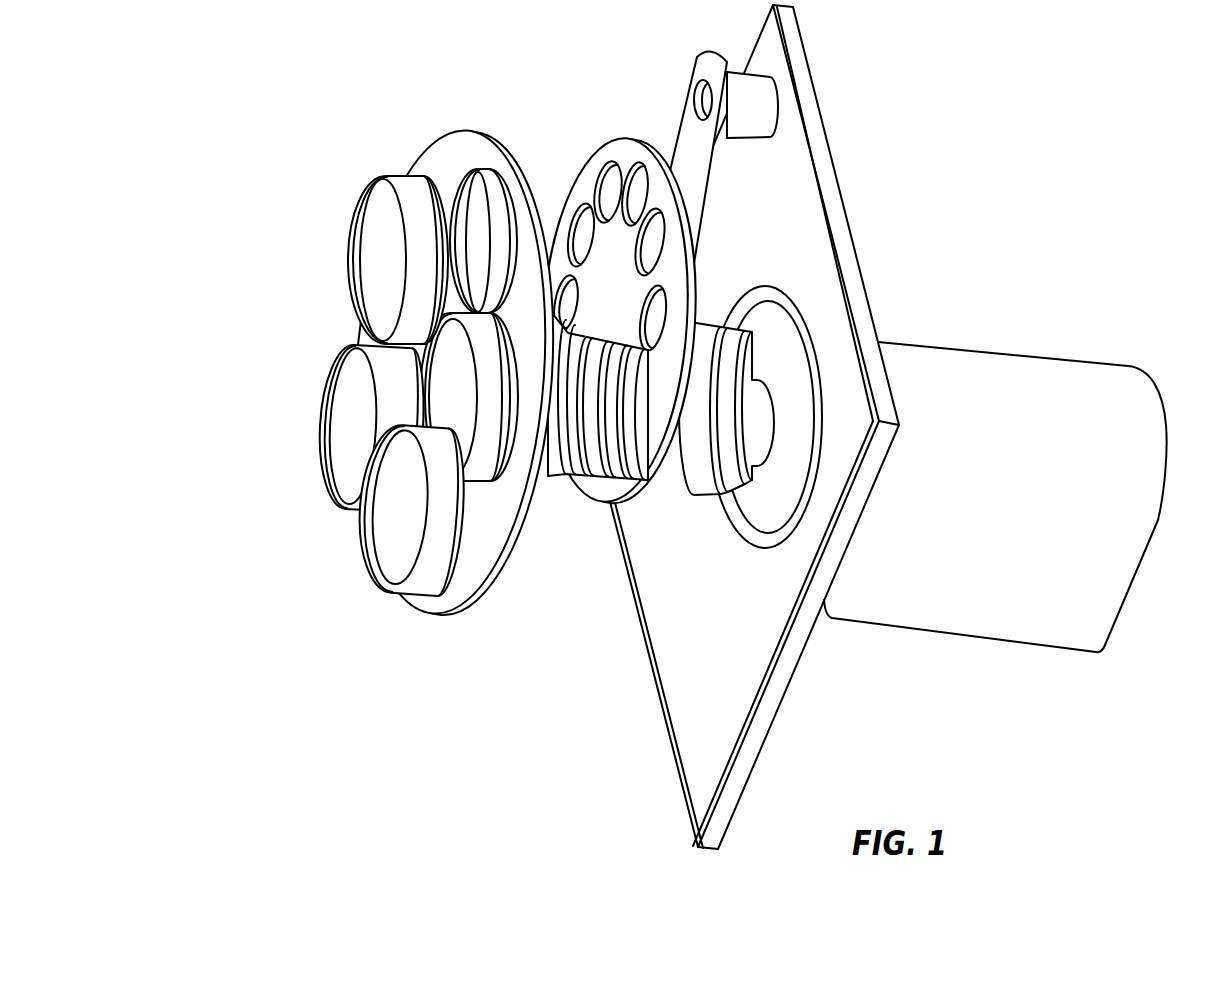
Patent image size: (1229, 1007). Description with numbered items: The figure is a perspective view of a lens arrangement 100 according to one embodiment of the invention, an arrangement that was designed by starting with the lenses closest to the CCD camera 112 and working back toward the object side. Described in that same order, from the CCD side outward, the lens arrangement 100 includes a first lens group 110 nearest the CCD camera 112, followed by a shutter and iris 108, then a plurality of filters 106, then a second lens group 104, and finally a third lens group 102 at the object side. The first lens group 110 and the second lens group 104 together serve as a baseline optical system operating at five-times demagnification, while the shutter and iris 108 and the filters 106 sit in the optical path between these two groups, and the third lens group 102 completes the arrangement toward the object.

The lens arrangement 100 is at (665, 427).
The third lens group 102 is at (352, 257).
The second lens group 104 is at (569, 472).
The plurality of filters 106 is at (668, 263).
The shutter and iris 108 is at (753, 507).
The first lens group 110 is at (790, 658).
The CCD camera 112 is at (977, 387).